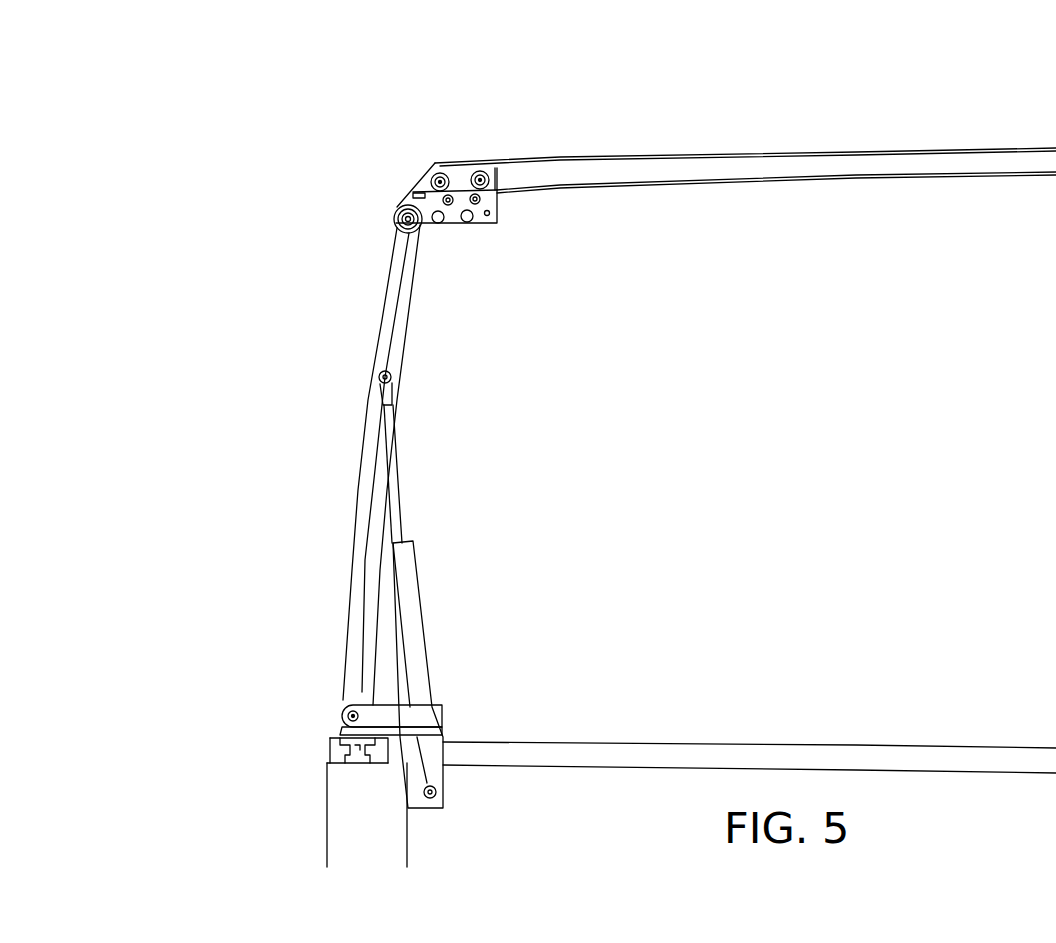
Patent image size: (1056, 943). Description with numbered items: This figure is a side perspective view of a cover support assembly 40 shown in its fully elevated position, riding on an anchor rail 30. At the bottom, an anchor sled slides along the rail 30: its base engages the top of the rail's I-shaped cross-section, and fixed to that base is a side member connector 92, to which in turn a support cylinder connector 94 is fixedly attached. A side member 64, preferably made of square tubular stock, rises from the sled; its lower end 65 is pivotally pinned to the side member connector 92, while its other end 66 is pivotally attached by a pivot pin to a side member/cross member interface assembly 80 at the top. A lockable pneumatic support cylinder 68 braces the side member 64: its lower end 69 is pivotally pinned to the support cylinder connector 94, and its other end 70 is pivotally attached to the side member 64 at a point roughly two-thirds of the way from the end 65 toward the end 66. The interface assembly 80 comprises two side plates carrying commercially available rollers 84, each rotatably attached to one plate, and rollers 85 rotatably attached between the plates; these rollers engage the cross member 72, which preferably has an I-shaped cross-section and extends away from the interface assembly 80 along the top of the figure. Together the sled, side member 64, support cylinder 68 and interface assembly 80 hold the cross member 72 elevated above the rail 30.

The cover support assembly 40 is at (357, 155).
The anchor rail 30 is at (335, 740).
The side member 64 is at (362, 486).
The end of side member 65 is at (342, 708).
The other end of side member 66 is at (394, 222).
The pneumatic support cylinder 68 is at (410, 601).
The end of support cylinder 69 is at (437, 794).
The other end of support cylinder 70 is at (392, 380).
The cross member 72 is at (856, 157).
The side member/cross member interface assembly 80 is at (503, 222).
The roller 84 is at (500, 181).
The roller 85 is at (505, 192).
The side member connector 92 is at (444, 723).
The support cylinder connector 94 is at (443, 763).